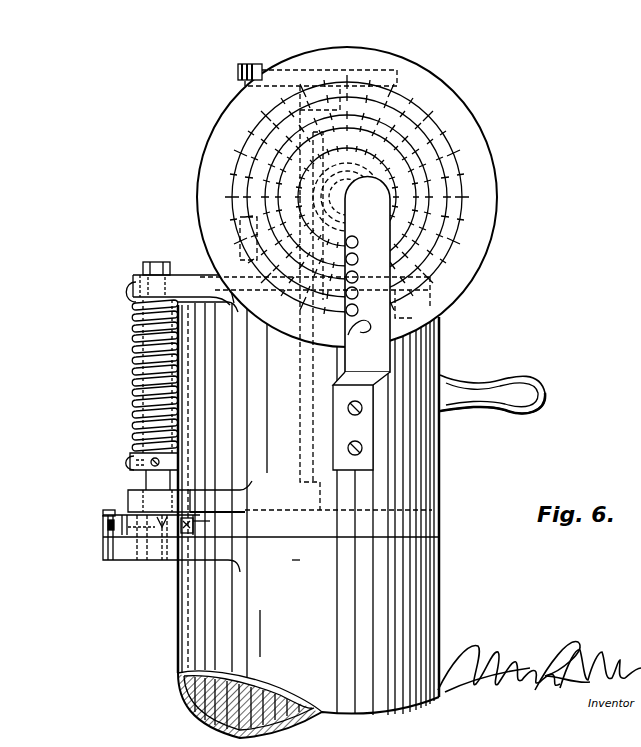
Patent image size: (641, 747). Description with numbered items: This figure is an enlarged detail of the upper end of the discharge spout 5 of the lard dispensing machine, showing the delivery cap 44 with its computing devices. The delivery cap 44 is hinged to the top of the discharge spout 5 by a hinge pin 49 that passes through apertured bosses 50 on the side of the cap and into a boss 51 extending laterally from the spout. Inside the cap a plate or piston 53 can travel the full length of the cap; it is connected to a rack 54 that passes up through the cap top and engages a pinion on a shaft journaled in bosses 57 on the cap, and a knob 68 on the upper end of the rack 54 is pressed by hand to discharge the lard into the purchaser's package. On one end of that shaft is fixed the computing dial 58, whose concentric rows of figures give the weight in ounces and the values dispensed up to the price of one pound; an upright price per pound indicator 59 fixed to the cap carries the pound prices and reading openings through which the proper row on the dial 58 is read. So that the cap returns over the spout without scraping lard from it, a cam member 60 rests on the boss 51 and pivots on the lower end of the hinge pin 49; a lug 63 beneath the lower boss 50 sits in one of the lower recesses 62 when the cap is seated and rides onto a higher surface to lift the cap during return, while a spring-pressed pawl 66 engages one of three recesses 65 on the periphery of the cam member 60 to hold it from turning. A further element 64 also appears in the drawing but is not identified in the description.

The discharge spout 5 is at (298, 578).
The delivery cap 44 is at (308, 520).
The hinge pin 49 is at (157, 262).
The apertured bosses 50 is at (132, 286).
The boss 51 is at (103, 551).
The plate or piston 53 is at (271, 528).
The rack 54 is at (232, 490).
The bosses 57 is at (495, 400).
The computing dial 58 is at (437, 88).
The price per pound indicator 59 is at (370, 362).
The cam member 60 is at (123, 560).
The lower surfaces or recesses 62 is at (163, 560).
The lug 63 is at (200, 528).
The spring 64 is at (140, 411).
The recesses 65 is at (103, 532).
The pawl 66 is at (103, 522).
The knob 68 is at (252, 66).